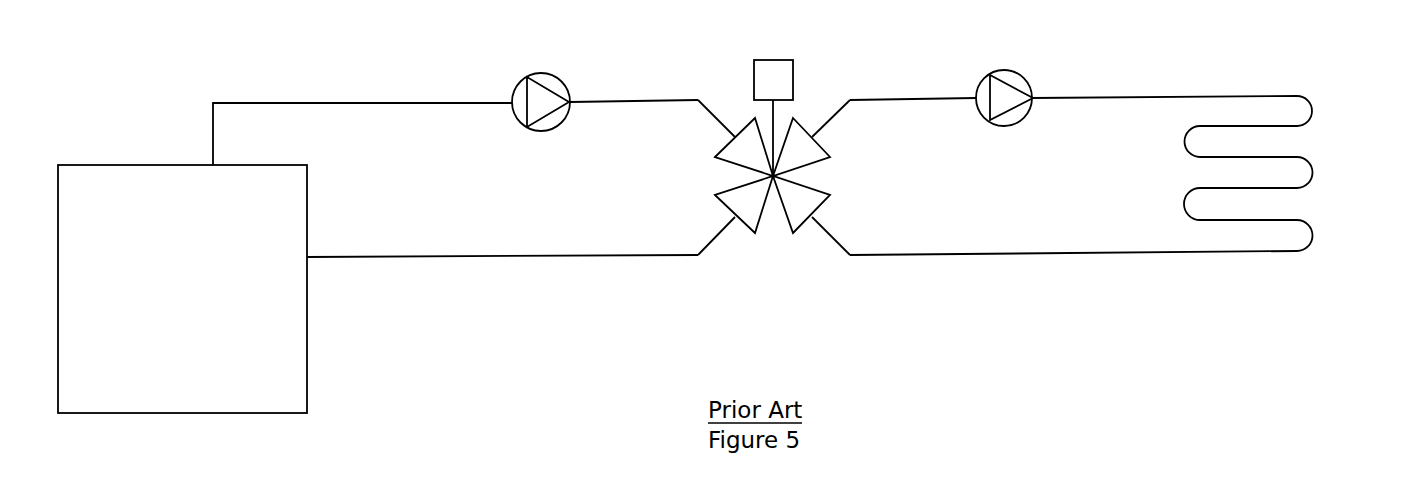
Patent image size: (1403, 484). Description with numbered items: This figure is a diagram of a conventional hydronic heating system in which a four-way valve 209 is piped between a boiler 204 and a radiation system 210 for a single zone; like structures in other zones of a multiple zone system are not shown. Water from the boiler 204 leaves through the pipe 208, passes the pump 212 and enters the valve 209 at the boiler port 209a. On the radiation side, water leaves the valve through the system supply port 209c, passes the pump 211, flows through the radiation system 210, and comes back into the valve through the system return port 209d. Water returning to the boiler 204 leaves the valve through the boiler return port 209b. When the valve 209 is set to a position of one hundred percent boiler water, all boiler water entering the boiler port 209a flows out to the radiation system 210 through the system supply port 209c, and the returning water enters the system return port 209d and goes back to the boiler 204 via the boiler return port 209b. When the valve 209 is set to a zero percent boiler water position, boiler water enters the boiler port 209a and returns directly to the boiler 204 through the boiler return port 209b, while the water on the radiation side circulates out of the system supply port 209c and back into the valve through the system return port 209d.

The boiler 204 is at (182, 265).
The supply pipe 208 is at (362, 117).
The pump 212 is at (543, 81).
The four-way valve 209 is at (774, 141).
The boiler port 209a is at (710, 138).
The boiler return port 209b is at (710, 215).
The system supply port 209c is at (836, 138).
The system return port 209d is at (837, 215).
The pump 211 is at (1021, 76).
The radiation system 210 is at (1289, 173).